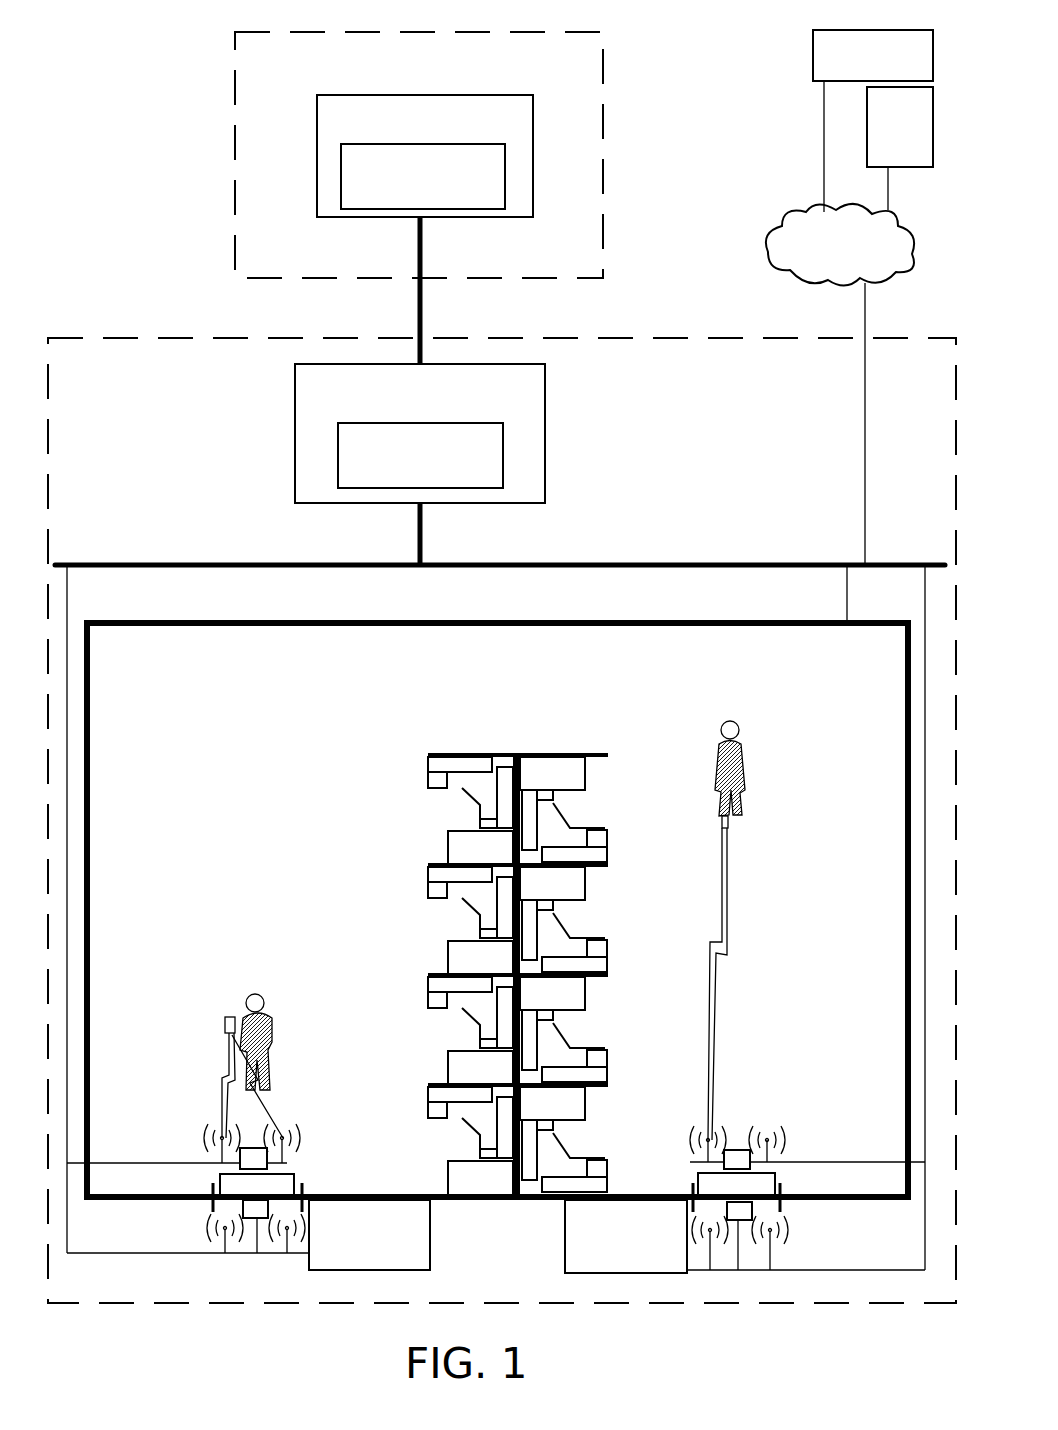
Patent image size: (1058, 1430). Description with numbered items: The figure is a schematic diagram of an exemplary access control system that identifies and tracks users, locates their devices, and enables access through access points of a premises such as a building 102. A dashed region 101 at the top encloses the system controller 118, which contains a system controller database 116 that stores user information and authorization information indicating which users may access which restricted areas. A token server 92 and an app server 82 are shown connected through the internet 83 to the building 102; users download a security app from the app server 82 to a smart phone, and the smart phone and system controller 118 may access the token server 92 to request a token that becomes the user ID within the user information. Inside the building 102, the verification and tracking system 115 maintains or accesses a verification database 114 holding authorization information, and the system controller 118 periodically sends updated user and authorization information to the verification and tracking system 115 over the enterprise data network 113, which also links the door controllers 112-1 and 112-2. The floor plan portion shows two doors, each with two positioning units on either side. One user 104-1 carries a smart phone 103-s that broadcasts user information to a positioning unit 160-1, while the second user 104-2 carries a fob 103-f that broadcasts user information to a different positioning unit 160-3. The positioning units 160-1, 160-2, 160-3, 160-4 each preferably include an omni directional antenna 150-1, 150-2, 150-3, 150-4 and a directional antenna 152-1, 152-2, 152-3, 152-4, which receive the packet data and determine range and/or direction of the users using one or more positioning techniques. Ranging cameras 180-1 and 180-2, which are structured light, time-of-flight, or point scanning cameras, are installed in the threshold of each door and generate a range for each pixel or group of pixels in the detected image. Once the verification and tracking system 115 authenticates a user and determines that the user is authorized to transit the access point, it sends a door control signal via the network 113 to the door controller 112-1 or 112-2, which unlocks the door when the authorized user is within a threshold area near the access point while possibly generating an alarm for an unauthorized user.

The remote system controller environment 101 is at (252, 30).
The system controller 118 is at (425, 156).
The system controller database 116 is at (423, 176).
The token server 92 is at (873, 55).
The app server 82 is at (900, 127).
The internet 83 is at (840, 245).
The building 102 is at (732, 332).
The verification and tracking system 115 is at (420, 433).
The verification database 114 is at (420, 455).
The enterprise data network 113 is at (640, 562).
The fob 103-f is at (715, 746).
The second user 104-2 is at (722, 835).
The smart phone 103-s is at (225, 1030).
The user 104-1 is at (272, 1022).
The omni directional antenna 150-1 is at (215, 1140).
The directional antenna 152-1 is at (290, 1128).
The positioning unit 160-1 is at (282, 1160).
The ranging camera 180-1 is at (257, 1193).
The positioning unit 160-2 is at (232, 1198).
The omni directional antenna 150-2 is at (225, 1253).
The directional antenna 152-2 is at (287, 1232).
The door controller 112-1 is at (369, 1235).
The door controller 112-2 is at (626, 1236).
The omni directional antenna 150-3 is at (705, 1140).
The directional antenna 152-3 is at (768, 1140).
The positioning unit 160-3 is at (724, 1165).
The ranging camera 180-2 is at (736, 1192).
The positioning unit 160-4 is at (755, 1205).
The omni directional antenna 150-4 is at (710, 1232).
The directional antenna 152-4 is at (770, 1232).